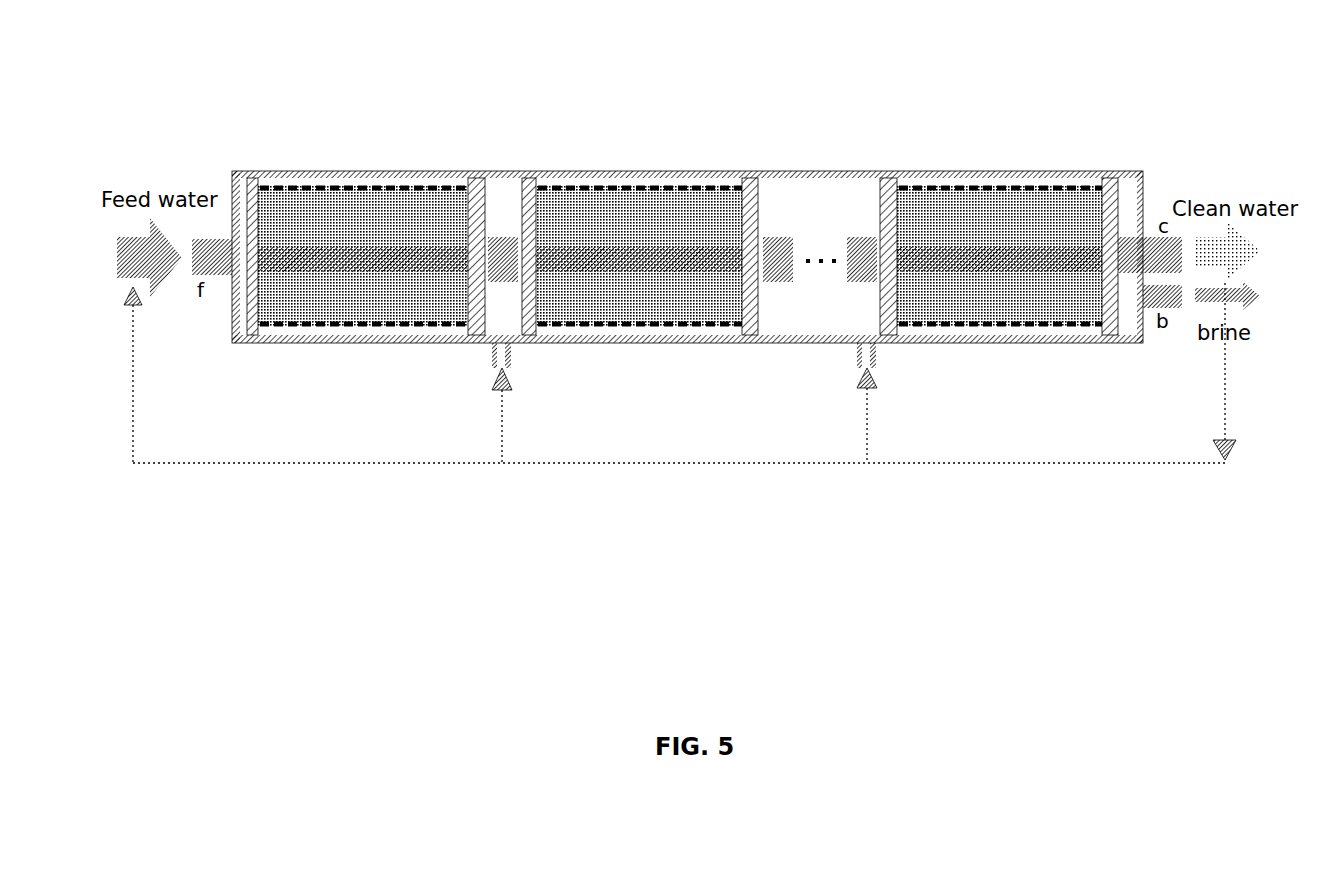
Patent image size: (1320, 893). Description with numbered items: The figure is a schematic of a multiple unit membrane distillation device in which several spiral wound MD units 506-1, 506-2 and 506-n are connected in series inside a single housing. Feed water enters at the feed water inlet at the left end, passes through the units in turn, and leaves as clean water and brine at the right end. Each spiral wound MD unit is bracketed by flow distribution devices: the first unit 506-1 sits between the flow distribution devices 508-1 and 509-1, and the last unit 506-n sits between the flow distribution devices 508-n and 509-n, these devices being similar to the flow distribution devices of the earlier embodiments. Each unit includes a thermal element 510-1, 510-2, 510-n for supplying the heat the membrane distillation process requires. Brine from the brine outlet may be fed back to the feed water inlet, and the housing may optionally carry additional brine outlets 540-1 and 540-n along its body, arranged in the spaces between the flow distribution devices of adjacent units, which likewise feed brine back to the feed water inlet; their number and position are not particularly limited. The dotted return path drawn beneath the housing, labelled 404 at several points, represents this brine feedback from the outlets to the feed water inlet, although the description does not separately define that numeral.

The flow distribution device 508-1 is at (245, 172).
The flow distribution device 509-1 is at (475, 172).
The spiral wound MD unit 506-1 is at (325, 172).
The spiral wound MD unit 506-2 is at (615, 172).
The flow distribution device 508-n is at (882, 172).
The flow distribution device 509-n is at (1113, 172).
The spiral wound MD unit 506-n is at (1013, 172).
The thermal element 510-1 is at (285, 326).
The thermal element 510-2 is at (675, 328).
The thermal element 510-n is at (1030, 328).
The additional brine outlet 540-1 is at (510, 372).
The additional brine outlet 540-n is at (875, 362).
The controller signal/sensing lines 404 is at (680, 410).